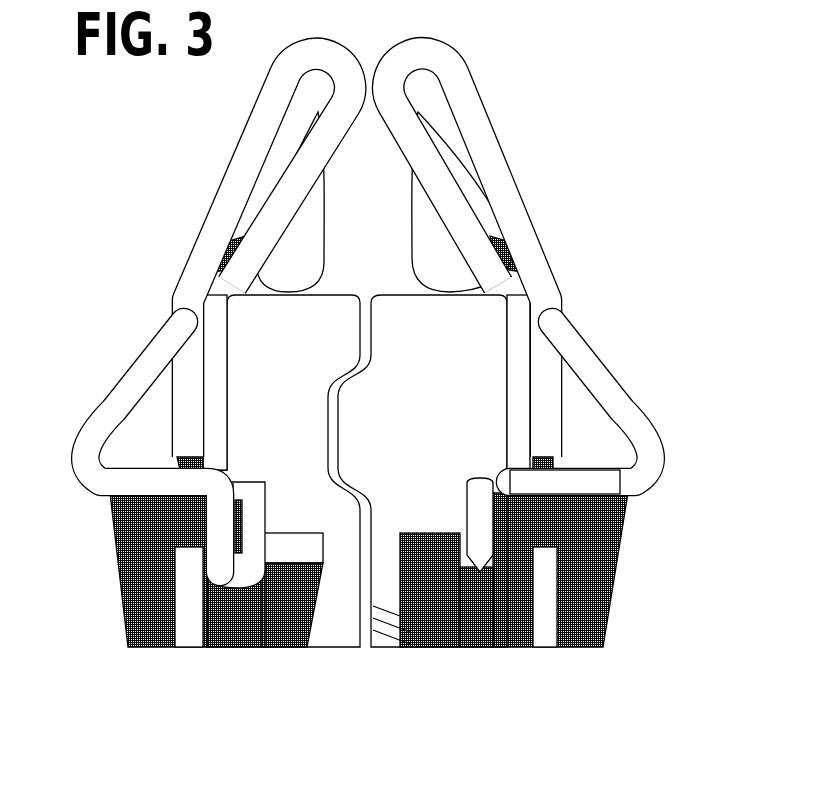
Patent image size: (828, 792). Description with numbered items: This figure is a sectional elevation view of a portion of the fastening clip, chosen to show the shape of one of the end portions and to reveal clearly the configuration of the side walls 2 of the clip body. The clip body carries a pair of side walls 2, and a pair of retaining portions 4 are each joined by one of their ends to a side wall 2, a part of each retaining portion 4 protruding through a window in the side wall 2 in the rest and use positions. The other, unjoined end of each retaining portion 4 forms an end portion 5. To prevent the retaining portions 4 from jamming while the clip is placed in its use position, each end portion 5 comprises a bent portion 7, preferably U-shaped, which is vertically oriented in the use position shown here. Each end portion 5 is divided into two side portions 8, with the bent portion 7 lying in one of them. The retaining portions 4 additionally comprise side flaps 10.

The side wall 2 is at (190, 338).
The retaining portion 4 is at (98, 422).
The end portion 5 is at (212, 572).
The bent portion 7 is at (257, 547).
The side portion 8 is at (565, 480).
The side flap 10 is at (278, 230).